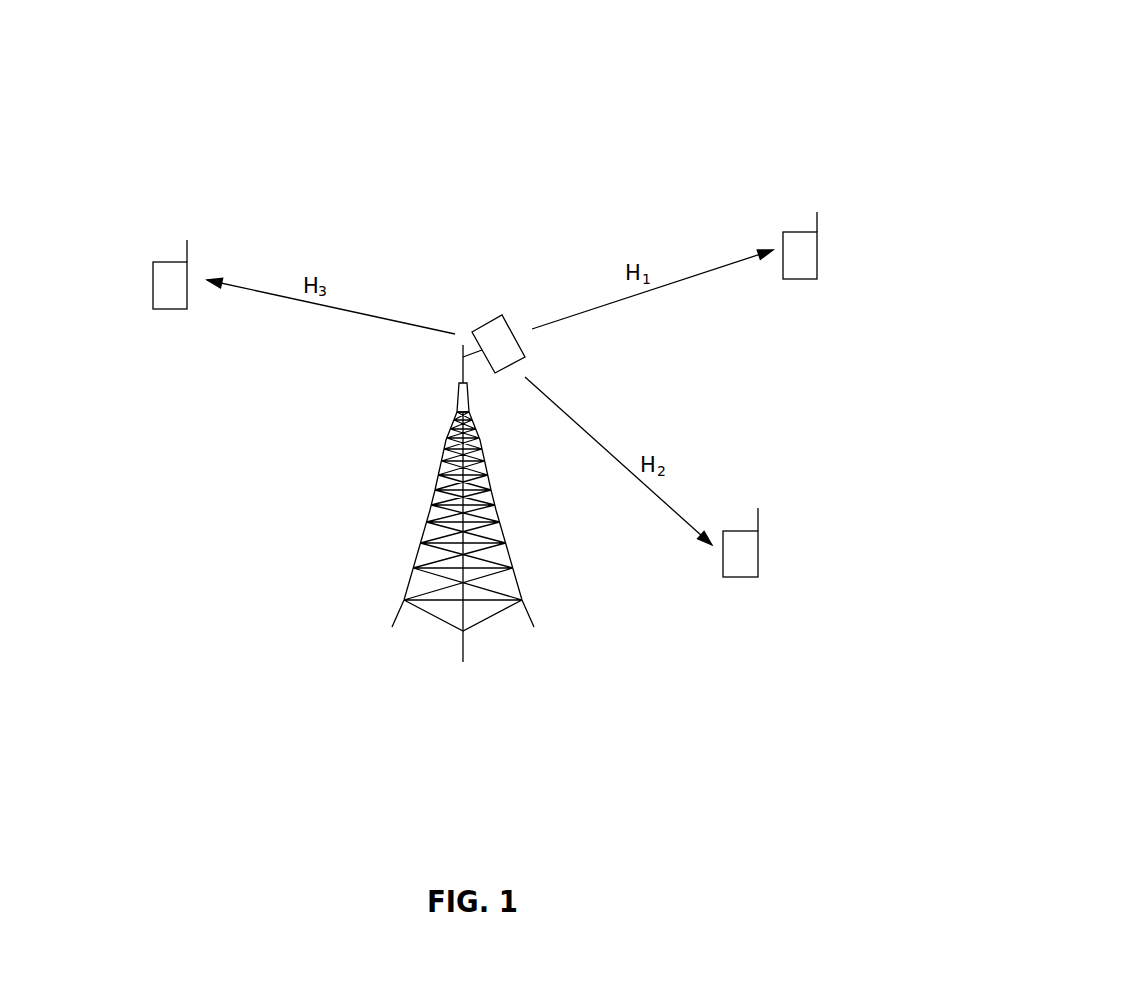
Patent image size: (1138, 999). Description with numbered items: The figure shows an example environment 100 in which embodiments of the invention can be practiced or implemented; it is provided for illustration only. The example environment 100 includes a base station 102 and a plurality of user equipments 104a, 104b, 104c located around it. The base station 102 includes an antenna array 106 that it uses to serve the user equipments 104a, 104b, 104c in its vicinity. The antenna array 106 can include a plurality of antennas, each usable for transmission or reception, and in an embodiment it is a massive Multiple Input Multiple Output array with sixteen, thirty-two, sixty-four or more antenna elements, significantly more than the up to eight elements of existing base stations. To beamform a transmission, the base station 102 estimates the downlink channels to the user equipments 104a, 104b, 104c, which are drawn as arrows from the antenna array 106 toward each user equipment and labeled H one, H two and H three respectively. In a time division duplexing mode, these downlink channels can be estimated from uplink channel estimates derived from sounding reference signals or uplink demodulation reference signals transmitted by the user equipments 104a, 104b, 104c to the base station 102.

The example environment 100 is at (1130, 56).
The base station 102 is at (437, 488).
The user equipment 104a is at (820, 252).
The user equipment 104b is at (760, 552).
The user equipment 104c is at (152, 284).
The antenna array 106 is at (477, 325).